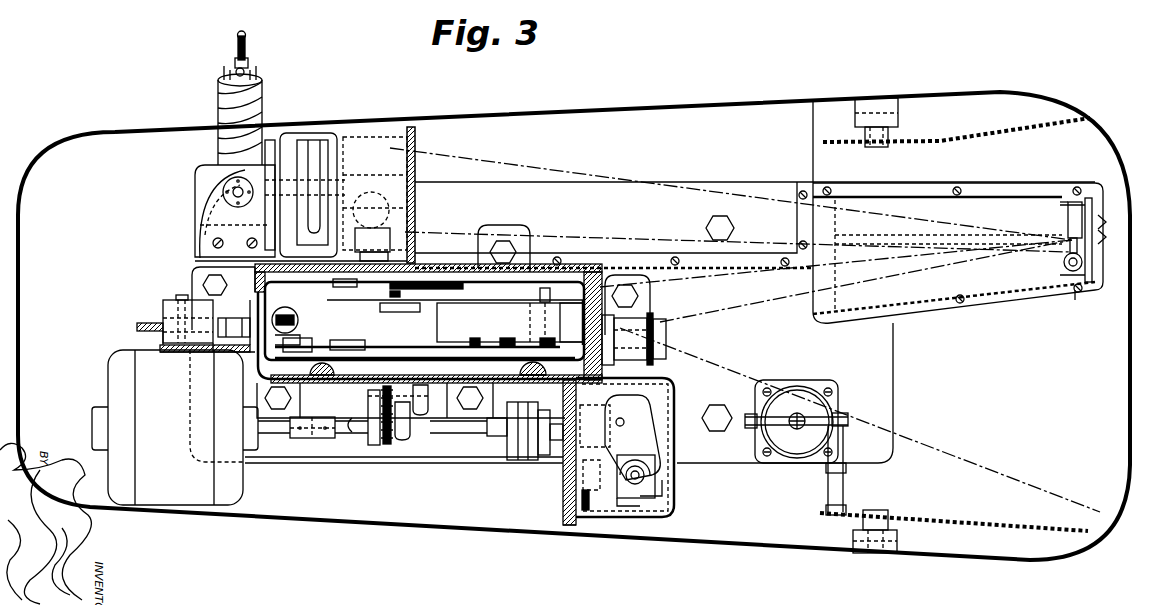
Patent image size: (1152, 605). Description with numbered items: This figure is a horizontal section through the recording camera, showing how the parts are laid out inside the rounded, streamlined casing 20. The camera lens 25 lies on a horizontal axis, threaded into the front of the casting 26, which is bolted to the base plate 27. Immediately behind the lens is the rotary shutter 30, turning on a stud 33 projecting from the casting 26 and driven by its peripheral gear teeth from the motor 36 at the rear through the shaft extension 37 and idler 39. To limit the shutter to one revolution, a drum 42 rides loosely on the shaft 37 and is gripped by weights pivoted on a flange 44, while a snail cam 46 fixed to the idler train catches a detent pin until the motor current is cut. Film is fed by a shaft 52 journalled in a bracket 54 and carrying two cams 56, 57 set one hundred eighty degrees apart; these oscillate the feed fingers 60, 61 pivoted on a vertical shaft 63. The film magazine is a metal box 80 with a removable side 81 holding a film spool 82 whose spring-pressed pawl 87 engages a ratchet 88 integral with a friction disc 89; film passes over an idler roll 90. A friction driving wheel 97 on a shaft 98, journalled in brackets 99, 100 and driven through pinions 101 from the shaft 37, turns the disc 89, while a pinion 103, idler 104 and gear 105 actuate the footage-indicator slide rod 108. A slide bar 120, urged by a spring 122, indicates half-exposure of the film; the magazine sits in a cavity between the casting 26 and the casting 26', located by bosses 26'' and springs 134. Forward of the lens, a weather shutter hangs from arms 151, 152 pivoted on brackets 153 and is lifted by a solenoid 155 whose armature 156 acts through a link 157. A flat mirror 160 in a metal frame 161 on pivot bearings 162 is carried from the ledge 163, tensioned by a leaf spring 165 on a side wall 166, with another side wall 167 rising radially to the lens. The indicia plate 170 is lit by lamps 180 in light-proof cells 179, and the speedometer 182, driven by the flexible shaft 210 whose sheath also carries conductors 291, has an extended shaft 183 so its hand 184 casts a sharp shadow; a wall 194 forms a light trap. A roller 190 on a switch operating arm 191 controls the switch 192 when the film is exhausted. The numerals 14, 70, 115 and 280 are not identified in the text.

The mounting bracket 14 is at (1108, 221).
The casing 20 is at (688, 103).
The camera lens 25 is at (635, 318).
The casting 26 is at (450, 370).
The casting 26' is at (322, 385).
The vertically extending bosses 26'' is at (413, 370).
The base plate 27 is at (893, 357).
The rotary shutter 30 is at (583, 330).
The stud 33 is at (545, 368).
The motor 36 is at (190, 490).
The shaft extension 37 is at (342, 440).
The idler 39 is at (565, 506).
The drum 42 is at (522, 458).
The flange 44 is at (506, 456).
The snail cam 46 is at (522, 431).
The shaft 52 is at (640, 486).
The bracket 54 is at (632, 442).
The cam 56 is at (608, 500).
The cam 57 is at (660, 478).
The feed finger 60 is at (622, 503).
The feed finger 61 is at (665, 493).
The vertical shaft 63 is at (622, 418).
The switch housing 70 is at (648, 410).
The metal box 80 is at (534, 266).
The removable side 81 is at (250, 354).
The film spool 82 is at (373, 302).
The spring-pressed pawl 87 is at (425, 300).
The ratchet 88 is at (400, 310).
The friction disc 89 is at (388, 364).
The idler roll 90 is at (543, 303).
The friction driving wheel 97 is at (407, 428).
The shaft 98 is at (421, 404).
The bracket 99 is at (378, 442).
The bracket 100 is at (427, 412).
The pinions 101 is at (383, 402).
The pinion 103 is at (572, 348).
The idler 104 is at (417, 356).
The gear 105 is at (492, 345).
The slide rod 108 is at (382, 342).
The stop 115 is at (313, 338).
The slide bar 120 is at (288, 303).
The spring 122 is at (256, 293).
The springs 134 is at (337, 285).
The arm 151 is at (975, 138).
The arm 152 is at (950, 520).
The brackets 153 is at (900, 116).
The solenoid 155 is at (795, 445).
The armature 156 is at (802, 416).
The link 157 is at (772, 428).
The flat mirror 160 is at (1064, 259).
The metal frame 161 is at (1076, 208).
The pivot bearings 162 is at (1075, 298).
The forwardly extending ledge 163 is at (1006, 305).
The leaf spring 165 is at (1068, 214).
The side wall 166 is at (930, 195).
The side wall 167 is at (940, 302).
The plate 170 is at (415, 143).
The light-proof cells 179 is at (385, 126).
The electric lamp 180 is at (408, 208).
The speedometer 182 is at (328, 126).
The extended shaft 183 is at (371, 207).
The speedometer hand 184 is at (408, 175).
The roller 190 is at (243, 318).
The switch operating arm 191 is at (202, 352).
The switch 192 is at (167, 315).
The vertically extending wall 194 is at (733, 272).
The flexible shaft 210 is at (247, 48).
The bearing block 280 is at (222, 196).
The group of conductors 291 is at (230, 80).